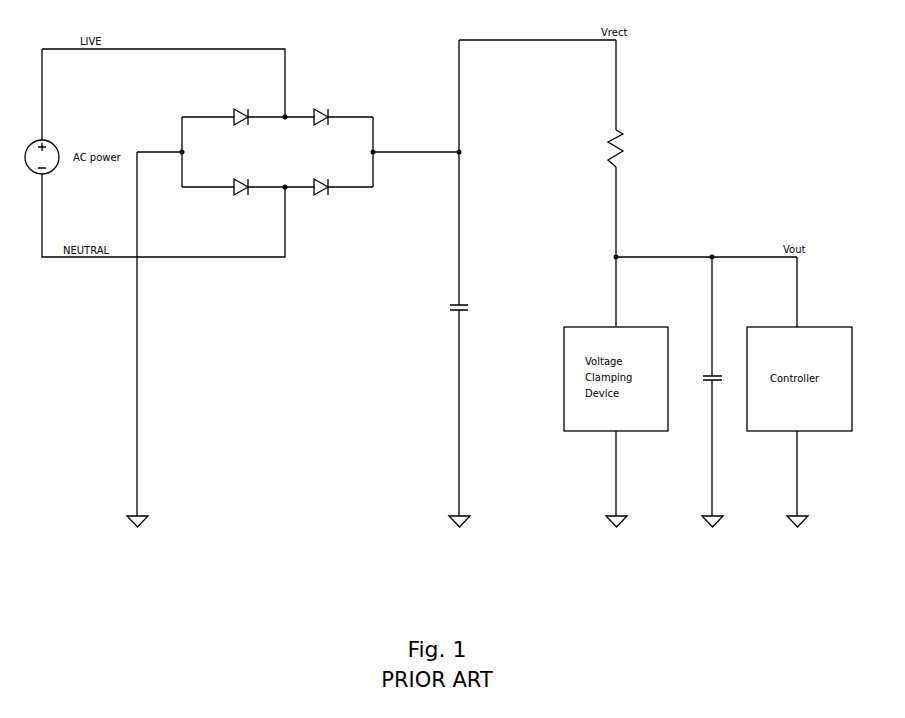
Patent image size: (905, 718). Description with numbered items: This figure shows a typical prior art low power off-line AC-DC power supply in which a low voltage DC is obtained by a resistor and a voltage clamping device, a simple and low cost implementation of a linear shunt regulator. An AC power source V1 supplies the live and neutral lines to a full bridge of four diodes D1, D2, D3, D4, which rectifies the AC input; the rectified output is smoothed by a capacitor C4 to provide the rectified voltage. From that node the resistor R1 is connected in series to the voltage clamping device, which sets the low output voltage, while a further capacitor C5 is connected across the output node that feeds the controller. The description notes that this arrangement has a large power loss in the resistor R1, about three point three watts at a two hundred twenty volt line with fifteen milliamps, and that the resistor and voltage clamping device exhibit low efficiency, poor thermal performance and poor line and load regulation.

The AC power source V1 is at (46, 152).
The bridge rectifier diode D1 is at (240, 111).
The bridge rectifier diode D2 is at (320, 111).
The bridge rectifier diode D3 is at (240, 181).
The bridge rectifier diode D4 is at (320, 181).
The resistor R1 is at (624, 148).
The capacitor C4 is at (463, 300).
The capacitor C5 is at (715, 371).